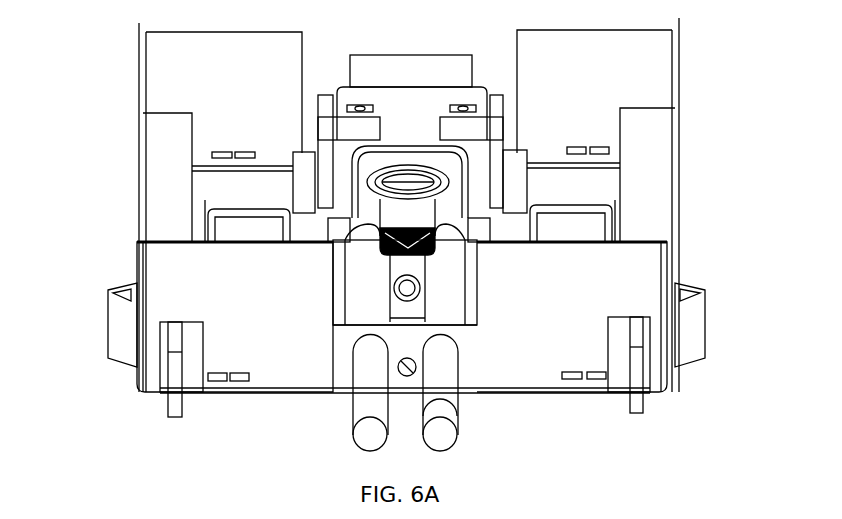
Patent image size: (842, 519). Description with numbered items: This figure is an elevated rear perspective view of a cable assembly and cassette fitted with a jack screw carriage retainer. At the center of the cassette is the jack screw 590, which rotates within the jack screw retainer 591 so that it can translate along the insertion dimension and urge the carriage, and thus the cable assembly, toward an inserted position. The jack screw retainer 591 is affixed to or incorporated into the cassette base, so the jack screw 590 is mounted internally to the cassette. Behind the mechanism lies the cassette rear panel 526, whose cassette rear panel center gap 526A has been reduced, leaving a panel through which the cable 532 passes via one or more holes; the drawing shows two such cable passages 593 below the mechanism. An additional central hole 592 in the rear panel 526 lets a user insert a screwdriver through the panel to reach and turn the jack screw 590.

The jack screw 590 is at (395, 282).
The jack screw retainer 591 is at (422, 301).
The cassette rear panel center gap 526A is at (478, 317).
The cassette rear panel 526 is at (197, 287).
The posts 593 is at (341, 415).
The cable 532 is at (372, 433).
The central hole 592 is at (415, 367).